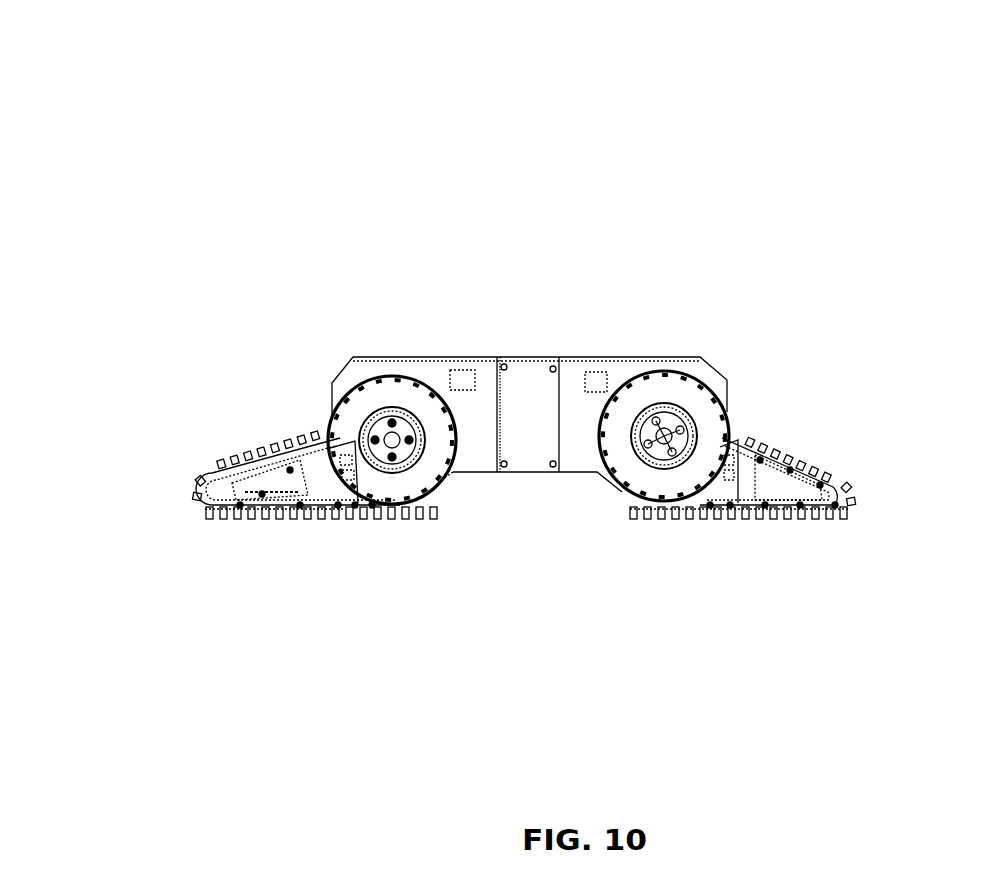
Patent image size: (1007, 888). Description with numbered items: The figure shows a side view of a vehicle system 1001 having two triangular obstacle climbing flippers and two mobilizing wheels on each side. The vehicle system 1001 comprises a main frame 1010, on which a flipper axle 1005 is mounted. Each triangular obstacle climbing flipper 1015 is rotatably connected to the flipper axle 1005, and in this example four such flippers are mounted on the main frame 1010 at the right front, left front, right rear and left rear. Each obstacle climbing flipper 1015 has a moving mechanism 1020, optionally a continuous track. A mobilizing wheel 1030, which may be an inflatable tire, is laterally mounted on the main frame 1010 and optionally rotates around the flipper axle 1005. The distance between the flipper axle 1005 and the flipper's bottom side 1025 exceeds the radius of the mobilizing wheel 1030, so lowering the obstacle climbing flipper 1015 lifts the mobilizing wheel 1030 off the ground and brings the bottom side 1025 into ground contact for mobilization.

The vehicle system 1001 is at (877, 158).
The flipper axle 1005 is at (385, 437).
The main frame 1010 is at (472, 416).
The triangular obstacle climbing flipper 1015 is at (270, 482).
The moving mechanism 1020 is at (210, 470).
The bottom side 1025 is at (562, 400).
The mobilizing wheel 1030 is at (400, 492).